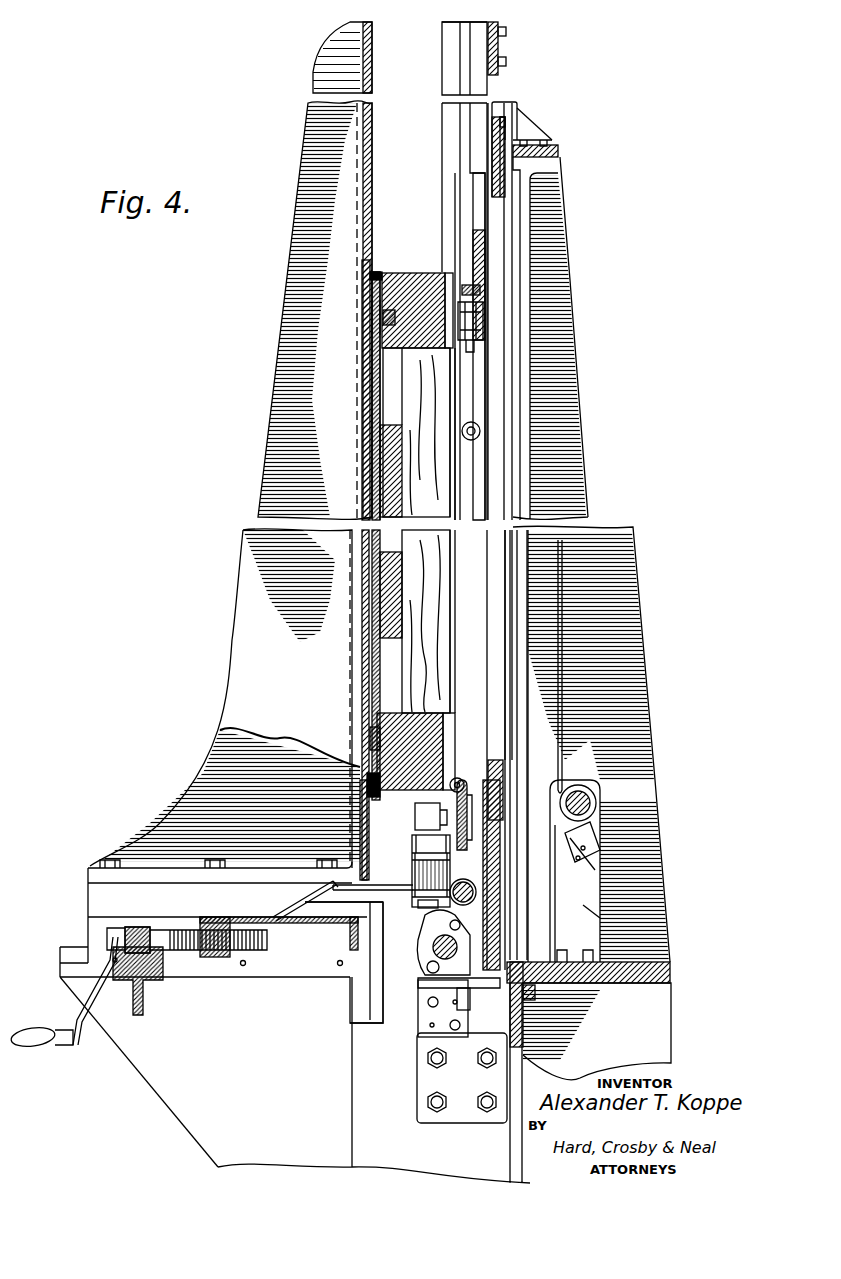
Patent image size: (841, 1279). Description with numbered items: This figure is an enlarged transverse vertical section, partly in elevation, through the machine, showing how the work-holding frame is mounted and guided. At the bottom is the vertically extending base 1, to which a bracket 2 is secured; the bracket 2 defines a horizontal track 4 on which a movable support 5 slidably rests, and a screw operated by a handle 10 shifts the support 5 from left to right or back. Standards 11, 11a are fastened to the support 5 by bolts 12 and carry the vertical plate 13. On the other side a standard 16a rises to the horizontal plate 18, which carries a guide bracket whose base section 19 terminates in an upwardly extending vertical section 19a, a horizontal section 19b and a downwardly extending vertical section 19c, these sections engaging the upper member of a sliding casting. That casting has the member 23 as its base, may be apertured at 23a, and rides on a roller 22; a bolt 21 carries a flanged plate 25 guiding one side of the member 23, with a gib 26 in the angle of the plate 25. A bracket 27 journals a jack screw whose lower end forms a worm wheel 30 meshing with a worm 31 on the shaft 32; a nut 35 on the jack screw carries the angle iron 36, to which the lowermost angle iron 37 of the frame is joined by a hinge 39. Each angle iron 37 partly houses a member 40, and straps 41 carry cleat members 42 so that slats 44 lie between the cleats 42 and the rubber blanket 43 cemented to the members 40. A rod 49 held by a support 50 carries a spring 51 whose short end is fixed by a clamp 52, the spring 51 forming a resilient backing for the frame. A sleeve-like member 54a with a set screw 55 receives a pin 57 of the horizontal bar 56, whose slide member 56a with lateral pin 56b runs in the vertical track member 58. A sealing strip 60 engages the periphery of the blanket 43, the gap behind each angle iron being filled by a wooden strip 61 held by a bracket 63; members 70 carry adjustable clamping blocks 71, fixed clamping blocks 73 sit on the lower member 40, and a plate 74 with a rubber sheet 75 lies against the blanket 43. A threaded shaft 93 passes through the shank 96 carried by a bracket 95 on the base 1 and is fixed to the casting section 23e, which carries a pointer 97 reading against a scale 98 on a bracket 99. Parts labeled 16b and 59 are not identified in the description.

The base 1 is at (444, 1072).
The bracket 2 is at (185, 1140).
The track 4 is at (78, 948).
The movable support 5 is at (235, 917).
The handle 10 is at (64, 1045).
The standard 11 is at (200, 775).
The standard 11a is at (232, 666).
The bolts 12 is at (217, 860).
The plate 13 is at (378, 360).
The standard 16a is at (575, 352).
The frame lower portion 16b is at (565, 1030).
The horizontal member or plate 18 is at (558, 150).
The bracket base section 19 is at (548, 138).
The upwardly extending vertical section 19a is at (522, 112).
The horizontal section 19b is at (505, 105).
The downwardly extending vertical section 19c is at (500, 122).
The bolt 21 is at (535, 995).
The roller 22 is at (480, 980).
The member 23 is at (505, 960).
The aperture 23a is at (512, 205).
The projecting section 23e is at (505, 195).
The flanged plate 25 is at (457, 997).
The gib or key 26 is at (517, 935).
The bracket 27 is at (452, 870).
The worm wheel 30 is at (452, 897).
The worm 31 is at (420, 906).
The shaft 32 is at (590, 910).
The nut 35 is at (425, 830).
The angle iron 36 is at (472, 810).
The angle iron 37 is at (447, 273).
The hinge 39 is at (455, 713).
The member 40 is at (410, 273).
The strap 41 is at (455, 560).
The cleat member 42 is at (440, 635).
The flexible member or rubber blanket 43 is at (402, 388).
The slat 44 is at (400, 473).
The rod 49 is at (595, 795).
The support 50 is at (600, 905).
The spring 51 is at (590, 805).
The clamp 52 is at (600, 842).
The sleeve-like member 54a is at (483, 336).
The set screw 55 is at (480, 305).
The horizontal bar 56 is at (488, 268).
The slide member 56a is at (473, 196).
The lateral pin 56b is at (481, 430).
The pin 57 is at (474, 348).
The track member 58 is at (440, 90).
The screws 59 is at (505, 48).
The sealing strip 60 is at (370, 278).
The strip 61 is at (367, 810).
The bracket 63 is at (376, 272).
The member 70 is at (383, 315).
The clamping block 71 is at (378, 322).
The clamping block 73 is at (370, 735).
The plate 74 is at (374, 430).
The rubber sheet 75 is at (365, 405).
The threaded shaft 93 is at (432, 950).
The bracket 95 is at (428, 1080).
The shank 96 is at (428, 1010).
The pointer 97 is at (392, 880).
The scale 98 is at (290, 905).
The bracket 99 is at (378, 985).